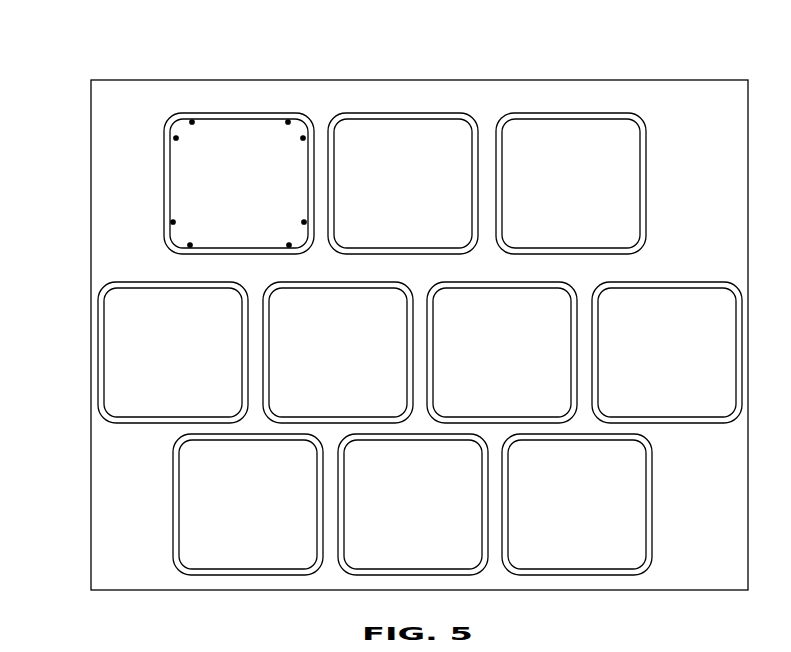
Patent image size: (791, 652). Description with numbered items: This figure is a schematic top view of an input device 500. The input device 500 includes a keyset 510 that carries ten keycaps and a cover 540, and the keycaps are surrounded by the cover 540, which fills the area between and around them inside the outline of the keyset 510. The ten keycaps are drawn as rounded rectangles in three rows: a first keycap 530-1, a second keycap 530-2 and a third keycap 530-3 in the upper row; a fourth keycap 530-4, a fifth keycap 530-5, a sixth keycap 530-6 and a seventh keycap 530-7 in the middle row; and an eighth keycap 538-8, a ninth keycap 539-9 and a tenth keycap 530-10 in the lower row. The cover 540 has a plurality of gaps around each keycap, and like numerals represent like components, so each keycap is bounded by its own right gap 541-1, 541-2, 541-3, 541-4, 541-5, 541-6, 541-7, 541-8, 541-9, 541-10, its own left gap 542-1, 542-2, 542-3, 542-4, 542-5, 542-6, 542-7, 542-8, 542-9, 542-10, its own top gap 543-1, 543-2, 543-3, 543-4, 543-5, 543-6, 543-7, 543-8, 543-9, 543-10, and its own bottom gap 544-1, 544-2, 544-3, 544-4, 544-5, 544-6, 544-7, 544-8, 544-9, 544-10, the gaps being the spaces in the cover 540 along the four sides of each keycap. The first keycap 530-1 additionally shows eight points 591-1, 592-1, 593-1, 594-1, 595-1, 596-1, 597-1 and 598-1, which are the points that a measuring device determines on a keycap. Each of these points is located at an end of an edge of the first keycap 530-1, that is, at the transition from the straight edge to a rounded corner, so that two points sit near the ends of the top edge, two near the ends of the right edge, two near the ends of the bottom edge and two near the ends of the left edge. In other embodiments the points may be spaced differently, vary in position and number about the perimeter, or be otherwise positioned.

The input device 500 is at (93, 59).
The keyset 510 is at (750, 74).
The cover 540 is at (711, 538).
The first keycap 530-1 is at (267, 193).
The keycap 530-2 is at (431, 193).
The keycap 530-3 is at (599, 193).
The keycap 530-4 is at (201, 362).
The keycap 530-5 is at (366, 362).
The keycap 530-6 is at (530, 362).
The keycap 530-7 is at (695, 362).
The keycap 538-8 is at (276, 514).
The keycap 539-9 is at (441, 514).
The keycap 530-10 is at (608, 515).
The right gap 541-1 is at (303, 222).
The right gap 541-2 is at (472, 223).
The right gap 541-3 is at (640, 223).
The right gap 541-4 is at (242, 392).
The right gap 541-5 is at (407, 392).
The right gap 541-6 is at (571, 392).
The right gap 541-7 is at (736, 392).
The right gap 541-8 is at (317, 544).
The right gap 541-9 is at (482, 544).
The right gap 541-10 is at (646, 541).
The left gap 542-1 is at (175, 196).
The left gap 542-2 is at (335, 199).
The left gap 542-3 is at (503, 199).
The left gap 542-4 is at (105, 368).
The left gap 542-5 is at (270, 368).
The left gap 542-6 is at (434, 368).
The left gap 542-7 is at (599, 368).
The left gap 542-8 is at (180, 520).
The left gap 542-9 is at (345, 520).
The left gap 542-10 is at (508, 524).
The top gap 543-1 is at (212, 120).
The top gap 543-2 is at (377, 120).
The top gap 543-3 is at (545, 120).
The top gap 543-4 is at (147, 289).
The top gap 543-5 is at (312, 289).
The top gap 543-6 is at (476, 289).
The top gap 543-7 is at (641, 289).
The top gap 543-8 is at (222, 441).
The top gap 543-9 is at (387, 441).
The top gap 543-10 is at (548, 441).
The bottom gap 544-1 is at (210, 248).
The bottom gap 544-2 is at (383, 234).
The bottom gap 544-3 is at (551, 234).
The bottom gap 544-4 is at (153, 403).
The bottom gap 544-5 is at (318, 403).
The bottom gap 544-6 is at (482, 403).
The bottom gap 544-7 is at (647, 403).
The bottom gap 544-8 is at (228, 555).
The bottom gap 544-9 is at (393, 555).
The bottom gap 544-10 is at (570, 569).
The point 591-1 is at (191, 120).
The point 592-1 is at (288, 120).
The point 593-1 is at (303, 138).
The point 594-1 is at (305, 224).
The point 595-1 is at (288, 248).
The point 596-1 is at (188, 246).
The point 597-1 is at (171, 222).
The point 598-1 is at (174, 138).